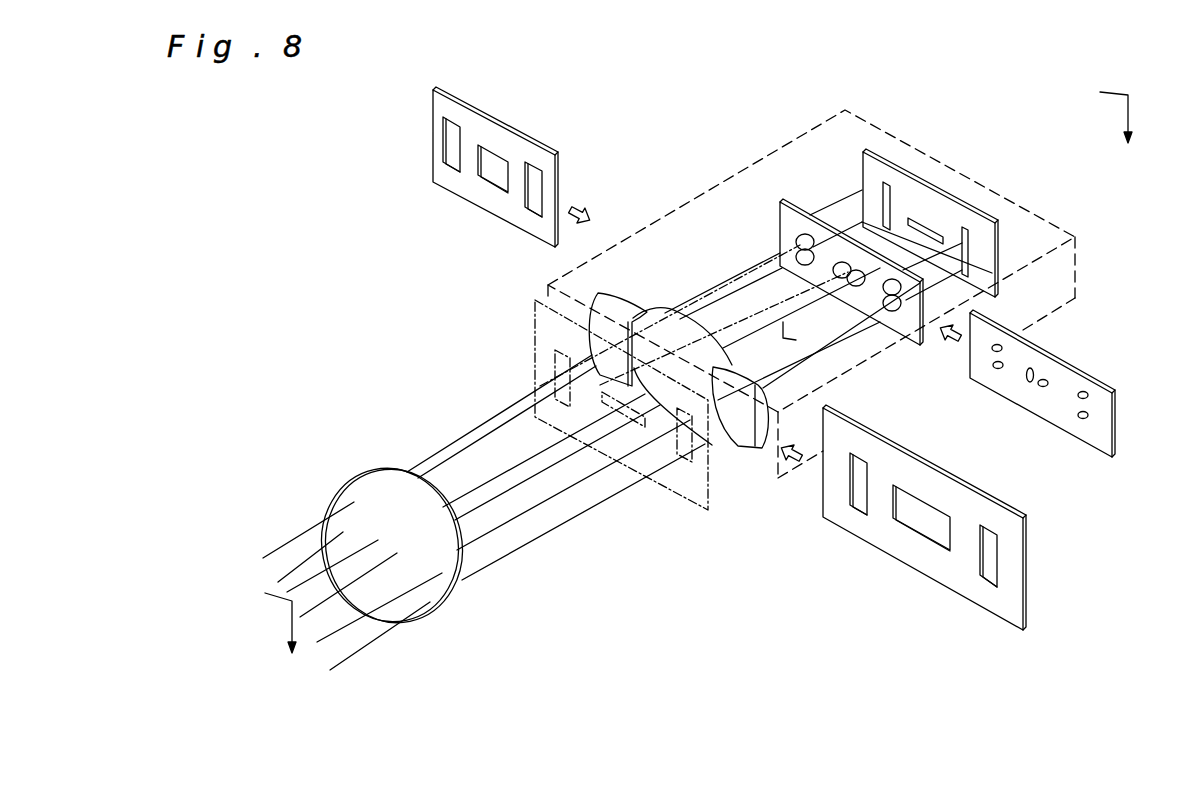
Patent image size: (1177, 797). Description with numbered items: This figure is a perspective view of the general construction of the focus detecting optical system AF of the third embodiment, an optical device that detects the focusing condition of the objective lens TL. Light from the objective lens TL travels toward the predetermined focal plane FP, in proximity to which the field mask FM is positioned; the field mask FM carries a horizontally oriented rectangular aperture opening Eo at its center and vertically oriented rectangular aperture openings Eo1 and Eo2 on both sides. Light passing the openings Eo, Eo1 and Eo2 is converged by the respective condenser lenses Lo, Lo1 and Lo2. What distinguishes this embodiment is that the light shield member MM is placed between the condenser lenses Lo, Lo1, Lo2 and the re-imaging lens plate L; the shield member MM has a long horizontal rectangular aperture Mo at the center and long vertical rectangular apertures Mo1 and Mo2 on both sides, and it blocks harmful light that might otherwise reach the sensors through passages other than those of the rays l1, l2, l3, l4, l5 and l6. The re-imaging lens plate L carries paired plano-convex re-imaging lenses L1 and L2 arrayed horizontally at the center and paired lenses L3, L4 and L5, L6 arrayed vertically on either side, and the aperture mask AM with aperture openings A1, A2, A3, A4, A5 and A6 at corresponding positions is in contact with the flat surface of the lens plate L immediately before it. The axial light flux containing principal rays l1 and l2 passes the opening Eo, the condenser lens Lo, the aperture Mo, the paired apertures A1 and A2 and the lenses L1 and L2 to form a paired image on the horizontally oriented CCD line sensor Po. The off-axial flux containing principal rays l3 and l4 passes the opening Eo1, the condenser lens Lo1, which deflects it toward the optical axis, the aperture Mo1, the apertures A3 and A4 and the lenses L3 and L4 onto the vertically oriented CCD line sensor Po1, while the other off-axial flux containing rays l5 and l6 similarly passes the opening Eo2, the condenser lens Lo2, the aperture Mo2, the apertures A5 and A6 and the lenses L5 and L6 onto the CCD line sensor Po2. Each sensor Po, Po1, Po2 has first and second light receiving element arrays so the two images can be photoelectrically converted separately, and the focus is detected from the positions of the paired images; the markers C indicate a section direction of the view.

The objective lens TL is at (373, 617).
The principal ray l1 is at (488, 477).
The principal ray l2 is at (493, 490).
The principal ray l3 is at (440, 467).
The principal ray l4 is at (458, 438).
The principal ray l5 is at (477, 582).
The principal ray l6 is at (475, 548).
The predetermined focal plane FP is at (535, 300).
The focus detecting optical system AF is at (773, 152).
The light shield member MM is at (478, 148).
The long vertical rectangular aperture Mo1 is at (452, 122).
The long horizontal rectangular aperture Mo is at (497, 153).
The long vertical rectangular aperture Mo2 is at (538, 170).
The condenser lens Lo1 is at (612, 293).
The condenser lens Lo is at (680, 338).
The condenser lens Lo2 is at (743, 433).
The re-imaging lens plate L is at (815, 264).
The re-imaging lens L1 is at (854, 287).
The re-imaging lens L2 is at (838, 279).
The re-imaging lens L3 is at (805, 234).
The re-imaging lens L4 is at (798, 250).
The re-imaging lens L5 is at (898, 296).
The re-imaging lens L6 is at (893, 311).
The CCD line sensor Po1 is at (863, 177).
The CCD line sensor Po is at (938, 237).
The CCD line sensor Po2 is at (968, 252).
The aperture mask AM is at (1069, 406).
The aperture opening A1 is at (1048, 385).
The aperture opening A2 is at (1030, 382).
The aperture opening A3 is at (1002, 350).
The aperture opening A4 is at (998, 369).
The aperture opening A5 is at (1088, 397).
The aperture opening A6 is at (1088, 417).
The field mask FM is at (965, 540).
The rectangular aperture opening Eo1 is at (857, 510).
The rectangular aperture opening Eo is at (918, 537).
The rectangular aperture opening Eo2 is at (985, 582).
The section line C is at (709, 372).